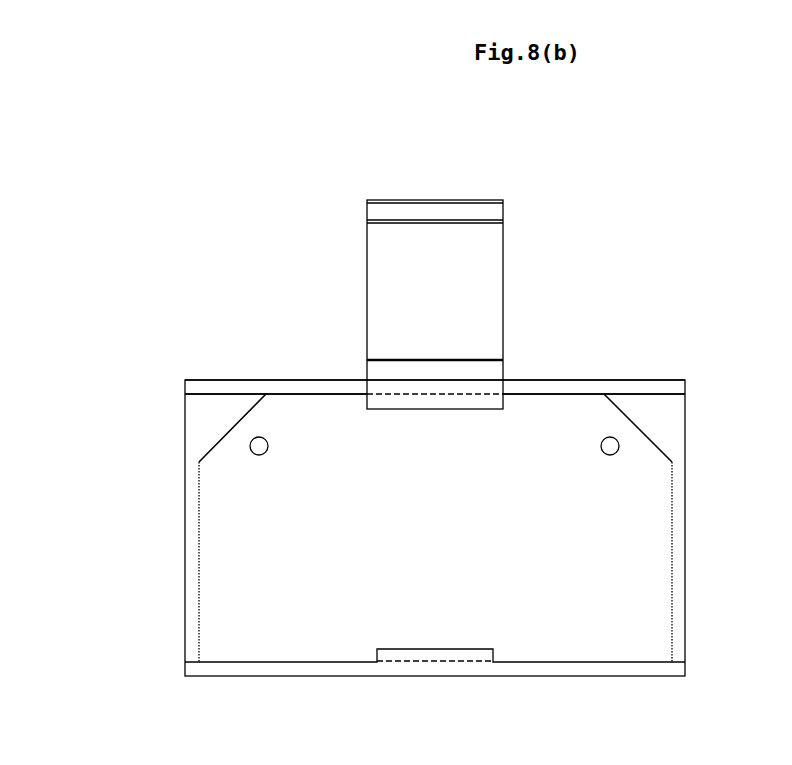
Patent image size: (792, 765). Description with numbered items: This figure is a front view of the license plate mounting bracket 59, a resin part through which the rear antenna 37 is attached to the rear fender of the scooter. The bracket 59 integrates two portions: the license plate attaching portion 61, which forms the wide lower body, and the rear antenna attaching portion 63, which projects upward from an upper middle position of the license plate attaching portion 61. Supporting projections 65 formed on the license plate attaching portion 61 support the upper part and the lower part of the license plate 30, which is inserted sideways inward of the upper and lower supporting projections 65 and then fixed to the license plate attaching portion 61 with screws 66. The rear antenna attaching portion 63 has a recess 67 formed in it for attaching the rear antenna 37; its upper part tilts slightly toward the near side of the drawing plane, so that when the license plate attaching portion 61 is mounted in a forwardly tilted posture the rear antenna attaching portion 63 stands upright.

The license plate 30 is at (212, 560).
The rear antenna 37 is at (492, 283).
The license plate mounting bracket 59 is at (650, 226).
The license plate attaching portion 61 is at (687, 382).
The rear antenna attaching portion 63 is at (568, 271).
The supporting projections 65 is at (393, 400).
The screws 66 is at (250, 438).
The recess 67 is at (470, 357).